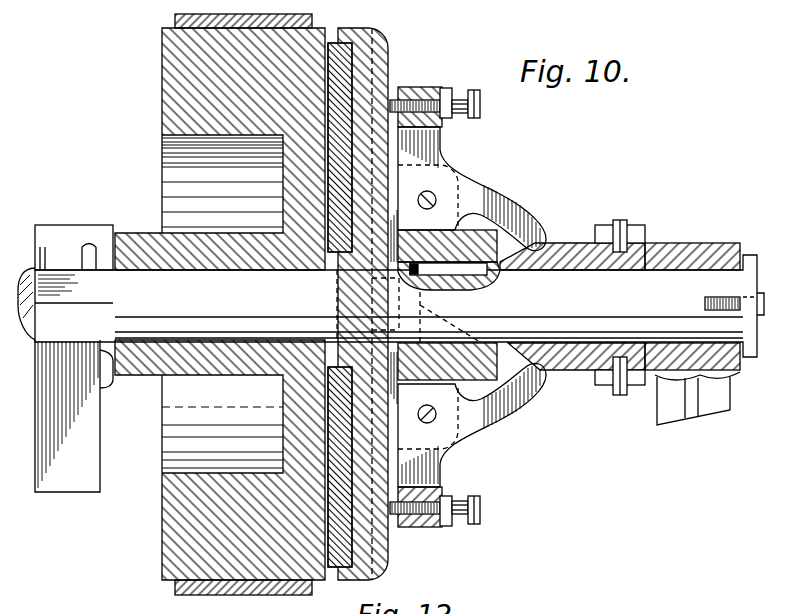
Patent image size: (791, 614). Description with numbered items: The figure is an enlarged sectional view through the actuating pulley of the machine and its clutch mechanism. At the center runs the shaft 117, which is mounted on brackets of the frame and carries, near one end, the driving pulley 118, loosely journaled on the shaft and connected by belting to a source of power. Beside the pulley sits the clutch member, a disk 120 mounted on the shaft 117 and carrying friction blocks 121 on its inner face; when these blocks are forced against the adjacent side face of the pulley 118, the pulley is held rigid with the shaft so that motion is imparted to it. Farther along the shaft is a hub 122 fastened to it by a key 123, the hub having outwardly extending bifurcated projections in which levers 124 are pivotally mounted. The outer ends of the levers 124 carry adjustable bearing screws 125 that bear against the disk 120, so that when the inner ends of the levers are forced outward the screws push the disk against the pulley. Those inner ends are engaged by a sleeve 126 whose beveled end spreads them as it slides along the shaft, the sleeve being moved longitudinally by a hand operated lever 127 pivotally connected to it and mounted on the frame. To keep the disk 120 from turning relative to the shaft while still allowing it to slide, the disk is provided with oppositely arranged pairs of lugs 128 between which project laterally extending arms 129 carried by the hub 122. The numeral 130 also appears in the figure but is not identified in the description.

The shaft 117 is at (391, 306).
The driving pulley 118 is at (180, 77).
The disk 120 is at (390, 56).
The friction blocks 121 is at (347, 540).
The hub 122 is at (457, 247).
The key 123 is at (470, 268).
The levers 124 is at (466, 185).
The adjustable bearing screws 125 is at (393, 88).
The sleeve 126 is at (565, 255).
The hand operated lever 127 is at (637, 226).
The lugs 128 is at (533, 408).
The arms 129 is at (543, 385).
The field winding 130 is at (183, 0).